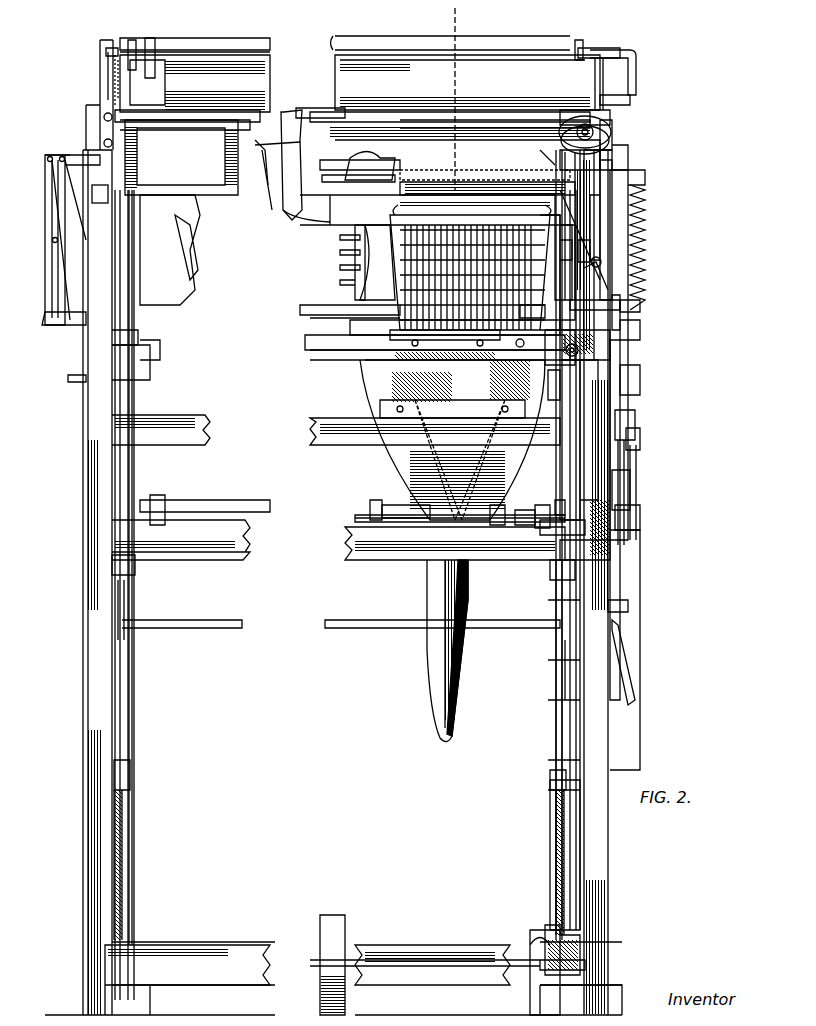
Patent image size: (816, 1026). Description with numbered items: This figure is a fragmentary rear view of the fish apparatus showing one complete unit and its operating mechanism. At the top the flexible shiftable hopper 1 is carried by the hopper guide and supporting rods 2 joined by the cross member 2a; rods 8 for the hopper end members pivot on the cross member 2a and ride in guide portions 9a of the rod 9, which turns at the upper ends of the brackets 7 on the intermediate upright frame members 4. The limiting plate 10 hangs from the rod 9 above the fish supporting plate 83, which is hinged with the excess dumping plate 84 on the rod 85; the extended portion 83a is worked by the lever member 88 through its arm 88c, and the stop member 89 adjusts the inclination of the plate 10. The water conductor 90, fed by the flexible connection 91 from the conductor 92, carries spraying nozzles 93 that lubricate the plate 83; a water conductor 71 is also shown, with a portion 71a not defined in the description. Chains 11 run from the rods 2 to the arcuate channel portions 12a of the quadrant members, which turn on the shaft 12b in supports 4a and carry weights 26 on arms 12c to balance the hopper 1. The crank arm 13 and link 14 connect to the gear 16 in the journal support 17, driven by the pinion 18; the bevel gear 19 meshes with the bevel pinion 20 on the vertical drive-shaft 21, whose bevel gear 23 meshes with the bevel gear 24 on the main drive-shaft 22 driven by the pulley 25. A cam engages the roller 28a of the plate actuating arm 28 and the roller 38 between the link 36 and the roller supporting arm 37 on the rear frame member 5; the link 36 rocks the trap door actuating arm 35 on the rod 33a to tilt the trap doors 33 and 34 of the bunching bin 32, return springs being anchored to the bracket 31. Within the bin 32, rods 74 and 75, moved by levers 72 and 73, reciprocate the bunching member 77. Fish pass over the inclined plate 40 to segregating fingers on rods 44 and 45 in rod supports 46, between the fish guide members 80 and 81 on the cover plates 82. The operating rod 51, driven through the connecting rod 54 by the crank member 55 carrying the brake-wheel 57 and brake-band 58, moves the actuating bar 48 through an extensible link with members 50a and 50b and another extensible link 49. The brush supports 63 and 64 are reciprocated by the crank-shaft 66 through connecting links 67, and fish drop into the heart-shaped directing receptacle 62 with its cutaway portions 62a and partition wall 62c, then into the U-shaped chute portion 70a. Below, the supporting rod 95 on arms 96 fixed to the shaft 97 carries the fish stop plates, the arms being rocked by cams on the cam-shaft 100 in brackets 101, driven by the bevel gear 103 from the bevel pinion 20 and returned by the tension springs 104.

The frame plate 1 is at (120, 82).
The slide rod 2 is at (120, 820).
The rod extension 2a is at (262, 160).
The guide rod 4 is at (127, 843).
The guide bracket 4a is at (612, 622).
The frame post 5 is at (88, 725).
The top bar 7 is at (108, 64).
The bolt 8 is at (132, 42).
The section line / bolt 9 is at (108, 52).
The bracket 9a is at (590, 48).
The hopper casing 10 is at (195, 83).
The base beam 11 is at (120, 872).
The rod coupling 12a is at (125, 780).
The cross bar 12b is at (492, 630).
The slide rod 12c is at (122, 608).
The brace 13 is at (626, 660).
The side plate 14 is at (640, 598).
The guide rod 16 is at (632, 470).
The guide rod 17 is at (628, 455).
The slide block 18 is at (628, 520).
The bracket 19 is at (624, 490).
The bar 20 is at (640, 550).
The rod 21 is at (578, 738).
The bottom beam 22 is at (518, 958).
The bottom bracket 23 is at (585, 945).
The base block 24 is at (520, 975).
The wheel 25 is at (340, 935).
The slide block 26 is at (125, 563).
The guide plate 28 is at (618, 365).
The guide plate extension 28a is at (630, 438).
The lever 31 is at (620, 300).
The hopper wall 32 is at (181, 157).
The plate 33 is at (405, 175).
The spring housing 33a is at (625, 178).
The link 34 is at (525, 176).
The spring cap 35 is at (640, 195).
The block 36 is at (632, 336).
The bracket 37 is at (625, 420).
The bracket 38 is at (640, 378).
The skirt 40 is at (330, 222).
The grid bar 44 is at (545, 232).
The grid bar 45 is at (555, 262).
The grid support 46 is at (555, 300).
The grid frame 48 is at (540, 215).
The pivot 49 is at (616, 290).
The link 50a is at (612, 250).
The link 50b is at (620, 262).
The block 51 is at (610, 278).
The spring 54 is at (640, 210).
The shaft housing 55 is at (608, 162).
The hub 57 is at (612, 138).
The wheel 58 is at (608, 152).
The hopper 62 is at (385, 445).
The hopper plate 62a is at (390, 360).
The hopper chute 62c is at (400, 462).
The bracket 63 is at (150, 372).
The support plate 64 is at (160, 345).
The block 66 is at (645, 340).
The bracket 67 is at (528, 348).
The discharge chute 70a is at (436, 735).
The slide bar 71 is at (310, 315).
The slide bar 71a is at (442, 345).
The lever arm 72 is at (52, 183).
The lever arm 73 is at (58, 203).
The pivot 74 is at (56, 158).
The arm 75 is at (80, 157).
The cam 77 is at (368, 152).
The rack 80 is at (395, 255).
The grid 81 is at (532, 252).
The side plate 82 is at (146, 592).
The flange 83 is at (187, 106).
The flange 83a is at (610, 130).
The guide 84 is at (296, 102).
The guide plate 85 is at (300, 110).
The bracket 88 is at (610, 118).
The bracket arm 88c is at (625, 98).
The rod 89 is at (618, 108).
The top rail 90 is at (250, 40).
The bolt 91 is at (150, 40).
The block 92 is at (155, 82).
The top rail 93 is at (362, 46).
The bar 95 is at (392, 505).
The arm 96 is at (630, 88).
The collar 97 is at (372, 500).
The rod 100 is at (360, 510).
The collar 101 is at (552, 515).
The block 103 is at (545, 505).
The cross beam 104 is at (495, 545).